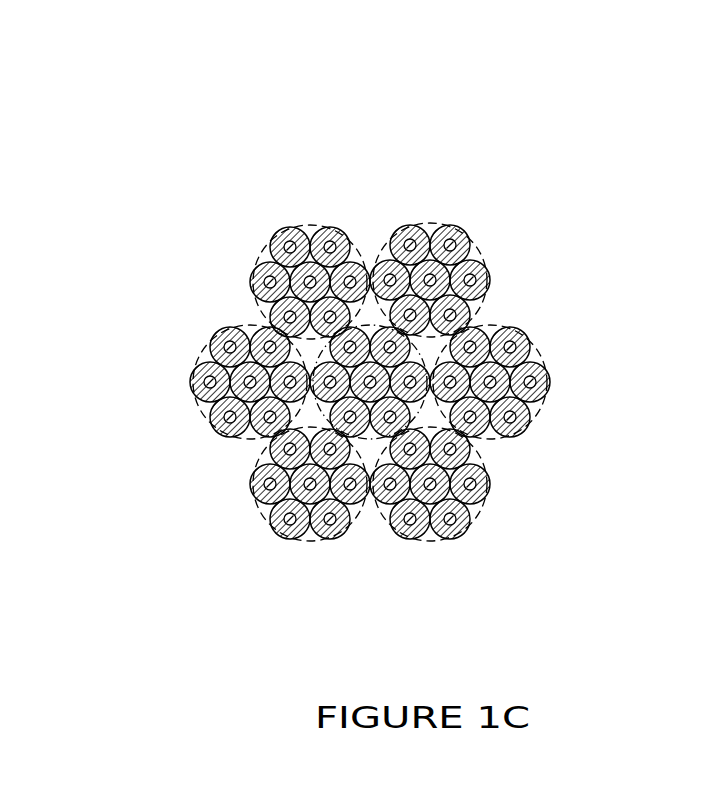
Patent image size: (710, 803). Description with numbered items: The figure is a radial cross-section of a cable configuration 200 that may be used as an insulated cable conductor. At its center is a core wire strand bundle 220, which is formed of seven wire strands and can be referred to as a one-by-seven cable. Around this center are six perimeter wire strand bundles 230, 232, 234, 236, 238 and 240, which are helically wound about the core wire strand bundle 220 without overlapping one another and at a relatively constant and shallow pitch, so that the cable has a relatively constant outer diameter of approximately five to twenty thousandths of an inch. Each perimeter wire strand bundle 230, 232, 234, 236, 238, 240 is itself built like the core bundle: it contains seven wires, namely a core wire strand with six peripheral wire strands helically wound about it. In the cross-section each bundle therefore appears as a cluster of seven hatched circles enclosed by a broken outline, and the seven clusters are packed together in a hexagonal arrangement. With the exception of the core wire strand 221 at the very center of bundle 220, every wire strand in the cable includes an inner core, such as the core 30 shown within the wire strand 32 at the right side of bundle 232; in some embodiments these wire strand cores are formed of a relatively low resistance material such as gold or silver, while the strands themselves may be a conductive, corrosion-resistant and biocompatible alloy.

The cable configuration 200 is at (350, 112).
The core wire strand bundle 220 is at (445, 333).
The core wire strand 221 is at (380, 372).
The perimeter wire strand bundle 230 is at (422, 222).
The perimeter wire strand bundle 232 is at (547, 368).
The perimeter wire strand bundle 234 is at (478, 520).
The perimeter wire strand bundle 236 is at (350, 533).
The perimeter wire strand bundle 238 is at (232, 437).
The perimeter wire strand bundle 240 is at (256, 258).
The core 30 is at (534, 378).
The wire strand 32 is at (547, 363).